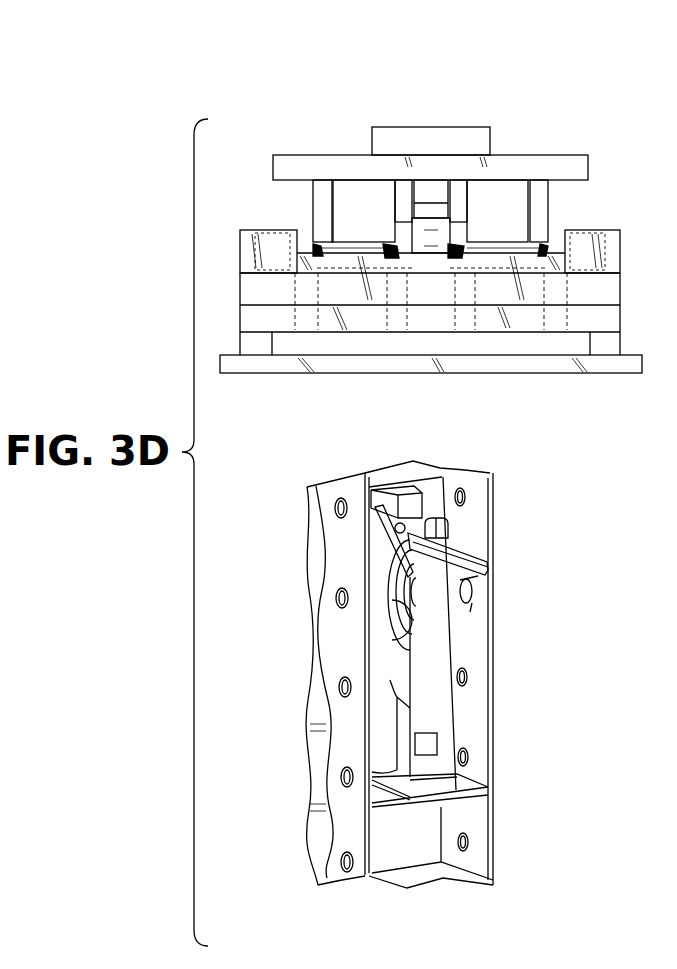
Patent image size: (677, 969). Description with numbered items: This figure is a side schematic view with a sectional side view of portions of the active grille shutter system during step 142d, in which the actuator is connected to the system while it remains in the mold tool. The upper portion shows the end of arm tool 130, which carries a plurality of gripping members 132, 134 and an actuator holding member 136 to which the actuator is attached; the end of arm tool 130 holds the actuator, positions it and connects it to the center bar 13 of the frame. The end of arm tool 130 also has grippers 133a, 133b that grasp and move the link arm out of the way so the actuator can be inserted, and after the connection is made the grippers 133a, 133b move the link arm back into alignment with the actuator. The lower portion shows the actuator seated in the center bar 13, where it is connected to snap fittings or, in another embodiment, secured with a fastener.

The center bar 13 is at (495, 732).
The end of arm tool 130 is at (575, 167).
The gripping member 132 is at (318, 203).
The gripper 133a is at (400, 191).
The gripper 133b is at (458, 192).
The gripping member 134 is at (542, 202).
The actuator holding member 136 is at (430, 190).
The step 142d is at (537, 106).